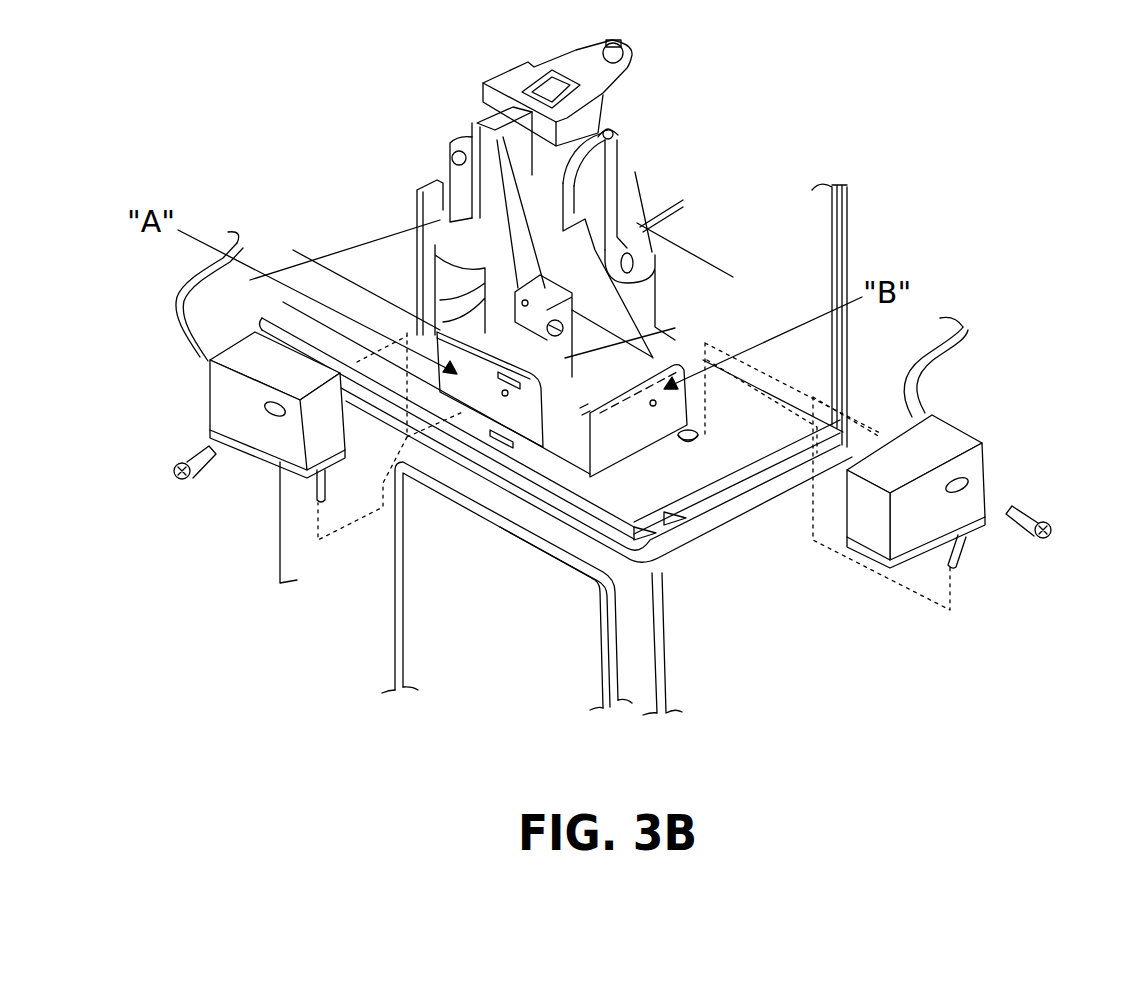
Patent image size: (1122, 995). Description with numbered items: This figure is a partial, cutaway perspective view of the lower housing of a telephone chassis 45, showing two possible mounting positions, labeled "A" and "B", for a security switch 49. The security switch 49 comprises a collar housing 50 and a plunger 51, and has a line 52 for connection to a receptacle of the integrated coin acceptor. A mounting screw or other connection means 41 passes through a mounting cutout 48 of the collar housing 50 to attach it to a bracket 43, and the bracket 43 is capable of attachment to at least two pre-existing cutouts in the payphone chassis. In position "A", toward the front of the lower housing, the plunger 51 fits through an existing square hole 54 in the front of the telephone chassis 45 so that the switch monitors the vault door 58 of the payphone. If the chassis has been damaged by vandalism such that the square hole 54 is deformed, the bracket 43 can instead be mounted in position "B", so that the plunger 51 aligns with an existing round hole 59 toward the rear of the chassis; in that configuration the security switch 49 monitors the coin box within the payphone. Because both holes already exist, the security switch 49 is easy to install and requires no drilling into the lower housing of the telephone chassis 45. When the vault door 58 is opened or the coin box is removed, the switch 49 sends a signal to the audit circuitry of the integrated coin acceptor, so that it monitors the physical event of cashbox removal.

The mounting screw 41 is at (201, 478).
The bracket 43 is at (443, 340).
The telephone chassis 45 is at (300, 328).
The mounting cutout 48 is at (273, 420).
The security switch 49 is at (598, 422).
The collar housing 50 is at (230, 391).
The plunger 51 is at (328, 490).
The line 52 is at (180, 297).
The square hole 54 is at (473, 420).
The vault door 58 is at (443, 598).
The round hole 59 is at (688, 445).